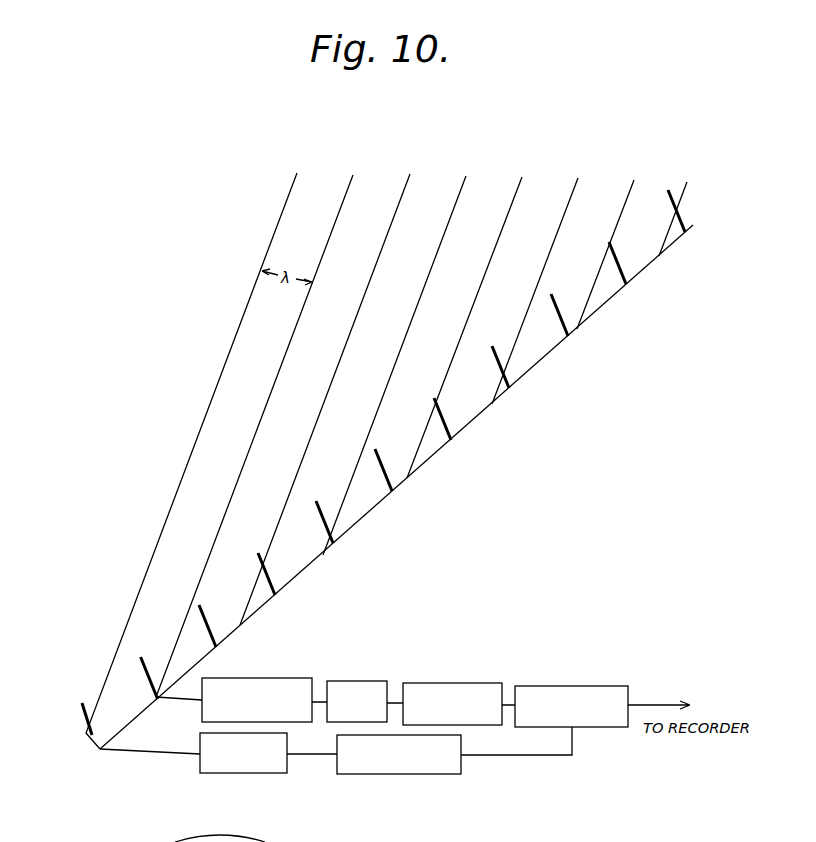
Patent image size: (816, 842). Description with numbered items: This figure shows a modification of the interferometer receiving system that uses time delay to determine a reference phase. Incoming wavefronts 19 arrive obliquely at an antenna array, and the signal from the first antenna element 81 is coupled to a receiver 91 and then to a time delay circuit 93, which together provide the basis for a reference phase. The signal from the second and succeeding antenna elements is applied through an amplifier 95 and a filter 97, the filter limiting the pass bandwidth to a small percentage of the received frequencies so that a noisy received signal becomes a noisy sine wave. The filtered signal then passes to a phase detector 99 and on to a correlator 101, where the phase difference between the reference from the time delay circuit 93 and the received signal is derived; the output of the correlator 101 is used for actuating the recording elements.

The wavefronts 19 is at (372, 272).
The first antenna element 81 is at (81, 711).
The receiver 91 is at (272, 768).
The time delay circuit 93 is at (448, 771).
The amplifier 95 is at (295, 678).
The filter 97 is at (355, 681).
The phase detector 99 is at (448, 683).
The correlator 101 is at (612, 686).